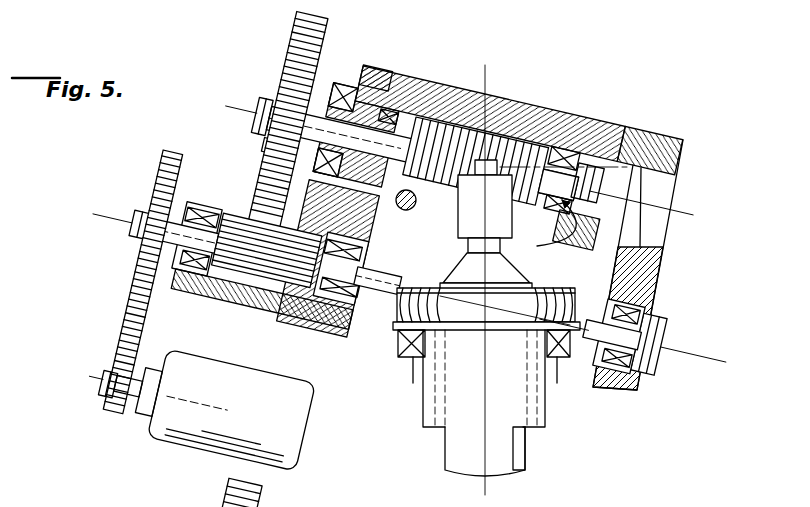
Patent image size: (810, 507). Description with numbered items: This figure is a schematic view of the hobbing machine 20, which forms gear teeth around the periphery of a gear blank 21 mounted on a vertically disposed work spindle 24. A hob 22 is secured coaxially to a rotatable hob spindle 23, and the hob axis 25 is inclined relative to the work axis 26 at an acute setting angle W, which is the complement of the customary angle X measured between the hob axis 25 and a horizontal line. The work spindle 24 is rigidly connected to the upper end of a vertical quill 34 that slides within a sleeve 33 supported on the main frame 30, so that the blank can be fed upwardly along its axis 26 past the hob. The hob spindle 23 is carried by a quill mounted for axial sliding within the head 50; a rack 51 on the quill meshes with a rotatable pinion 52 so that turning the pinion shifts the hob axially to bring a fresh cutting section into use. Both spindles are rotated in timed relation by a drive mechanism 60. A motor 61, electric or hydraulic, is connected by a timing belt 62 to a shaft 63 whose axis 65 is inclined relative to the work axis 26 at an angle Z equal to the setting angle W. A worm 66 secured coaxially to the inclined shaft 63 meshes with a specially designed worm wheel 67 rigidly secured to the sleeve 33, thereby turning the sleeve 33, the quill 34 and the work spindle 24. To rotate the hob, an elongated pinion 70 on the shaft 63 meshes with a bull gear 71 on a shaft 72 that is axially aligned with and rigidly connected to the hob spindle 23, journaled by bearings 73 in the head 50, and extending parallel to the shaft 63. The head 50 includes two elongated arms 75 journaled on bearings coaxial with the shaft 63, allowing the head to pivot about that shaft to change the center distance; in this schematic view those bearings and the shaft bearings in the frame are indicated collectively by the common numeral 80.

The hobbing machine 20 is at (701, 128).
The gear blank 21 is at (562, 196).
The hob 22 is at (500, 245).
The hob spindle 23 is at (415, 126).
The work spindle 24 is at (470, 264).
The hob axis 25 is at (673, 197).
The work axis 26 is at (518, 464).
The main frame 30 is at (262, 313).
The sleeve 33 is at (424, 393).
The quill 34 is at (445, 448).
The head 50 is at (472, 91).
The rack 51 is at (283, 203).
The pinion 52 is at (403, 210).
The drive mechanism 60 is at (238, 208).
The motor 61 is at (167, 437).
The timing belt 62 is at (137, 300).
The shaft 63 is at (182, 242).
The axis of the shaft 65 is at (698, 354).
The worm 66 is at (450, 308).
The worm wheel 67 is at (398, 303).
The elongated pinion 70 is at (243, 289).
The bull gear 71 is at (287, 53).
The shaft 72 is at (358, 120).
The bearings 73 is at (268, 147).
The arms 75 is at (333, 324).
The bearings 80 is at (366, 262).
The angle X is at (575, 168).
The setting angle W is at (556, 236).
The angle Z is at (490, 420).